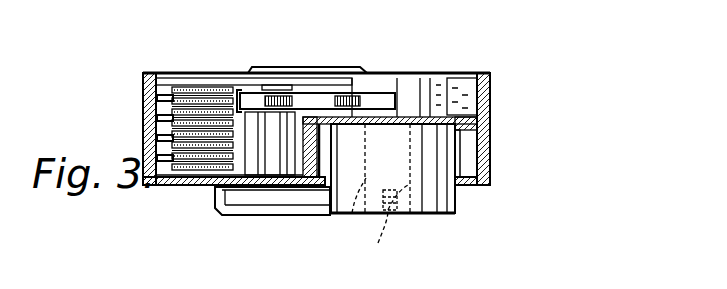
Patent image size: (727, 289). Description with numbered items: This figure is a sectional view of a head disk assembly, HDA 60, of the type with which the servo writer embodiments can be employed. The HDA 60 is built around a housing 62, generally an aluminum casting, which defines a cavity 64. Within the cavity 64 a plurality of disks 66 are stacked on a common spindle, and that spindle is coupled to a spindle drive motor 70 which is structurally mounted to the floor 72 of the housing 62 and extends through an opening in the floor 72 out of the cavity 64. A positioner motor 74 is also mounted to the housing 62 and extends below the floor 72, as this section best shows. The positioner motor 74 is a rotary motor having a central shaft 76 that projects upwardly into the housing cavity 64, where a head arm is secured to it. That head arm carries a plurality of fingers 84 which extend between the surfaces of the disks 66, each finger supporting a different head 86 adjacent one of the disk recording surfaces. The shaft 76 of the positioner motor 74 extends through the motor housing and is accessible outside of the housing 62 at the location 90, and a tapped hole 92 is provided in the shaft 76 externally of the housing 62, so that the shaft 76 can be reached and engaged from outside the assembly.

The head disk assembly 60 is at (511, 91).
The housing 62 is at (490, 119).
The cavity 64 is at (466, 78).
The disks 66 is at (152, 88).
The spindle drive motor 70 is at (263, 216).
The floor 72 is at (212, 178).
The positioner motor 74 is at (458, 198).
The central shaft 76 is at (352, 215).
The fingers 84 is at (192, 125).
The head 86 is at (170, 110).
The accessible shaft end 90 is at (402, 213).
The tapped hole 92 is at (377, 245).